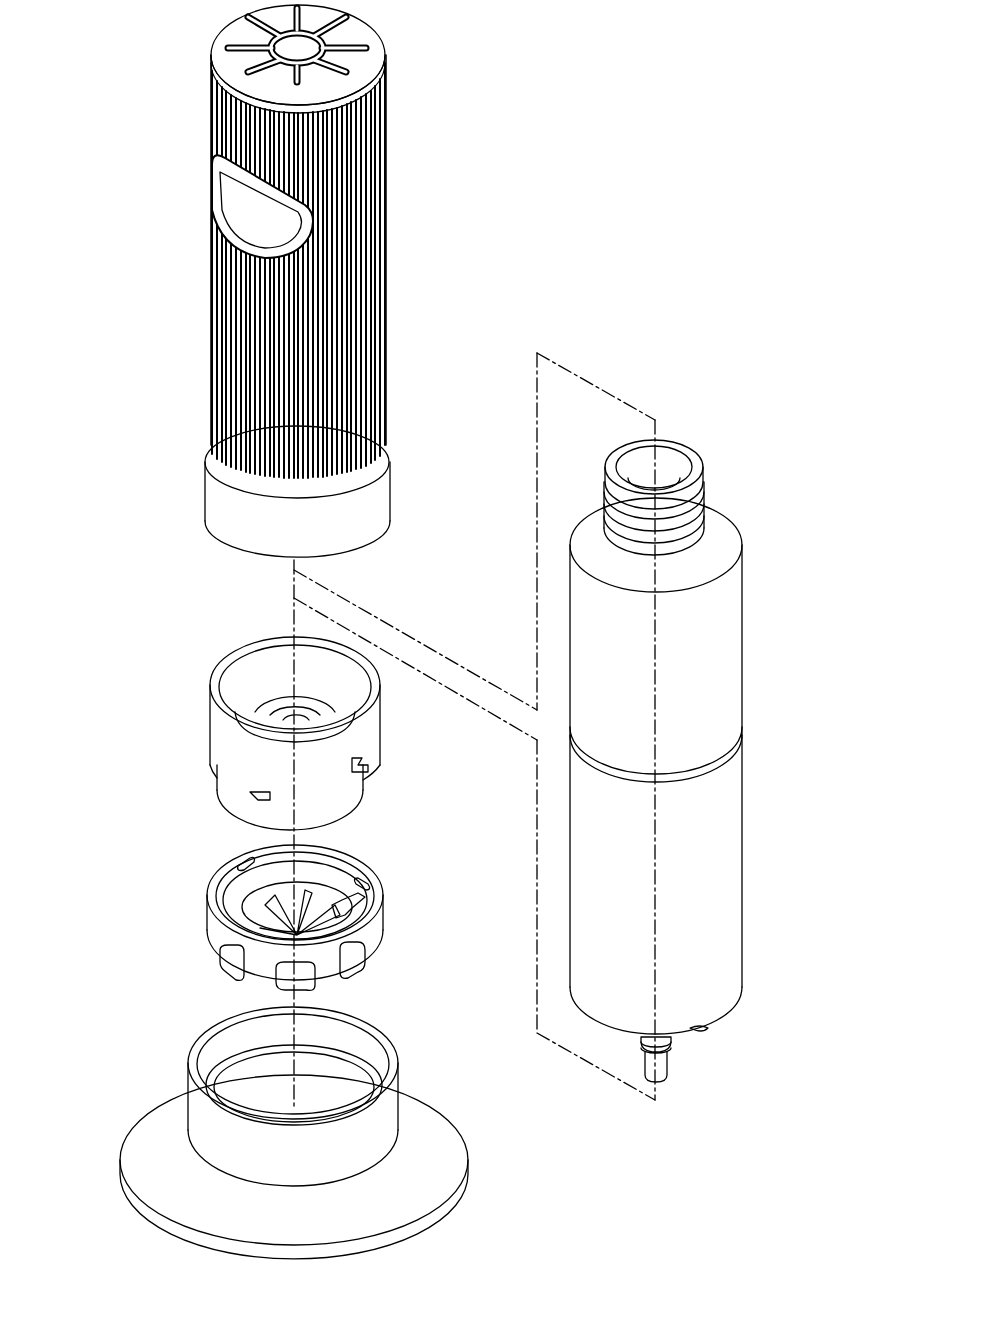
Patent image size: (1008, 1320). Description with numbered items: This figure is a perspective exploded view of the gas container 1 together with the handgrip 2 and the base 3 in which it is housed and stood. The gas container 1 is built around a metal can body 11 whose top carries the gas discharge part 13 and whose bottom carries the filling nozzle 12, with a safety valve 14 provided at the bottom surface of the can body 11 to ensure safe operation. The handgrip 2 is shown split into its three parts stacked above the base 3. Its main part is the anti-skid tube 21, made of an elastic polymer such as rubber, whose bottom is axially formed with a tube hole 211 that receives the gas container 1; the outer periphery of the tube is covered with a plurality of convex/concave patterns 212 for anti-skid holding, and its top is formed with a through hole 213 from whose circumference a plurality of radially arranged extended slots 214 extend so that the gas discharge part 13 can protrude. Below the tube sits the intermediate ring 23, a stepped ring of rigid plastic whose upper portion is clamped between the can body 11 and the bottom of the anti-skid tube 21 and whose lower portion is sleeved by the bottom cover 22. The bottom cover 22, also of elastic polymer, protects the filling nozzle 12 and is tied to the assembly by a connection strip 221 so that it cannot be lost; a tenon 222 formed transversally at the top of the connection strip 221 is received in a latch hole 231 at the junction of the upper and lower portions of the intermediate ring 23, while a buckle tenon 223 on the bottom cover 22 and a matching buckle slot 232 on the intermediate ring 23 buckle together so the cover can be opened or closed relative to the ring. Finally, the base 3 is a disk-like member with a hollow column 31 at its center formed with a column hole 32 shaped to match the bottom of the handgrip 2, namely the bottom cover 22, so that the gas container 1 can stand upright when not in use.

The gas container 1 is at (765, 575).
The can body 11 is at (742, 652).
The filling nozzle 12 is at (672, 1046).
The gas discharge part 13 is at (700, 457).
The safety valve 14 is at (702, 1033).
The handgrip 2 is at (146, 52).
The anti-skid tube 21 is at (388, 490).
The tube hole 211 is at (236, 546).
The convex/concave patterns 212 is at (385, 195).
The through hole 213 is at (352, 33).
The extended slots 214 is at (345, 60).
The bottom cover 22 is at (337, 890).
The connection strip 221 is at (367, 903).
The tenon 222 is at (365, 868).
The buckle tenon 223 is at (245, 862).
The intermediate ring 23 is at (346, 742).
The latch hole 231 is at (360, 770).
The buckle slot 232 is at (252, 795).
The base 3 is at (329, 1118).
The hollow column 31 is at (200, 1105).
The column hole 32 is at (268, 1066).